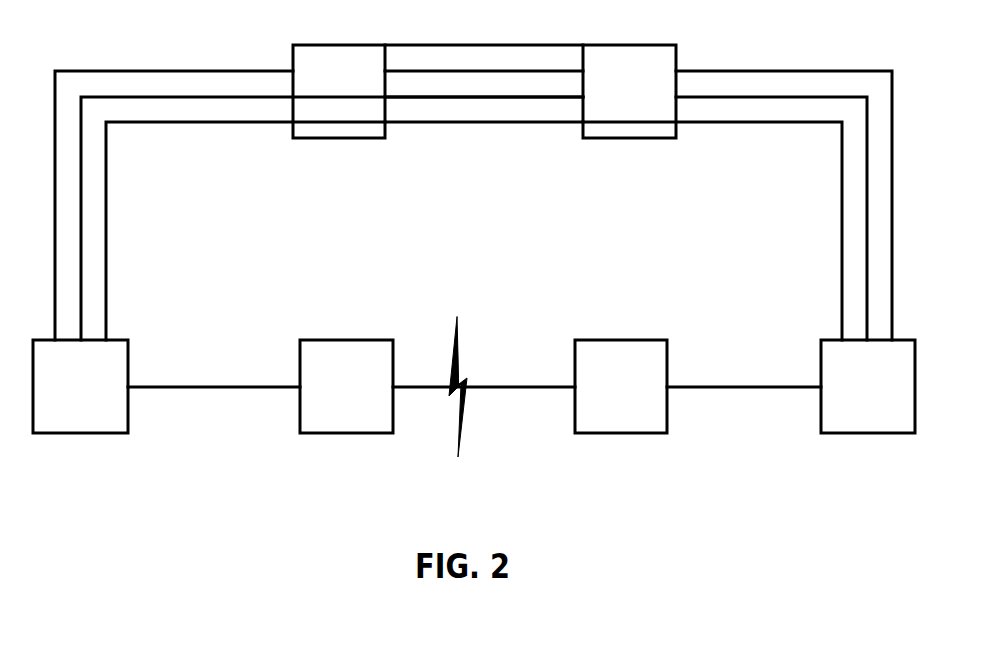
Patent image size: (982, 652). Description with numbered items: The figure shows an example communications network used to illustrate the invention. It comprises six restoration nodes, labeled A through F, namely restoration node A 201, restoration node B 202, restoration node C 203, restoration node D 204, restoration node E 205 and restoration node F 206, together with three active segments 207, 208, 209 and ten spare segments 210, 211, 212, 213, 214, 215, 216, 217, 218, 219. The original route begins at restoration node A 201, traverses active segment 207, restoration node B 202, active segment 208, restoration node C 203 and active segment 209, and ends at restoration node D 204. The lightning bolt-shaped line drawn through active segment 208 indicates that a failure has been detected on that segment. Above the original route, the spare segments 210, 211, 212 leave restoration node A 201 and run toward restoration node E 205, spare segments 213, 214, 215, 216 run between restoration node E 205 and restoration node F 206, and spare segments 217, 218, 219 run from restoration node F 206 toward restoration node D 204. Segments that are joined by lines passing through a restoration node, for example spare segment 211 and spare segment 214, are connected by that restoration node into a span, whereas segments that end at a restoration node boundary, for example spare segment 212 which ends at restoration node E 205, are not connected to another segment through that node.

The restoration node A 201 is at (95, 433).
The restoration node B 202 is at (360, 433).
The restoration node C 203 is at (633, 433).
The restoration node D 204 is at (878, 433).
The restoration node E 205 is at (350, 138).
The restoration node F 206 is at (642, 138).
The active segment 207 is at (228, 387).
The active segment 208 is at (545, 387).
The active segment 209 is at (755, 387).
The spare segment 210 is at (106, 178).
The spare segment 211 is at (81, 225).
The spare segment 212 is at (55, 260).
The spare segment 213 is at (408, 122).
The spare segment 214 is at (488, 97).
The spare segment 215 is at (437, 71).
The spare segment 216 is at (517, 45).
The spare segment 217 is at (737, 122).
The spare segment 218 is at (712, 97).
The spare segment 219 is at (808, 71).